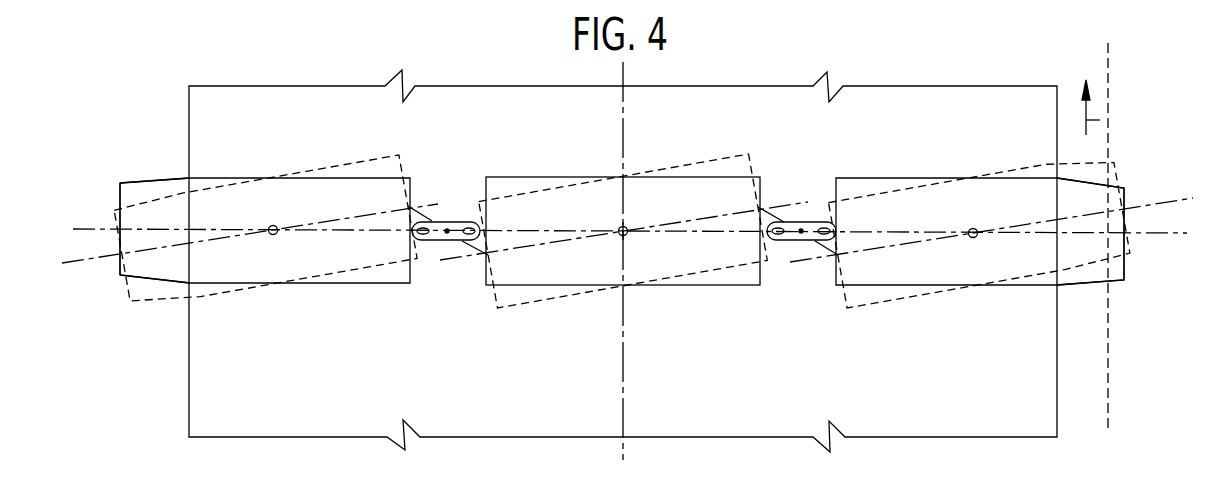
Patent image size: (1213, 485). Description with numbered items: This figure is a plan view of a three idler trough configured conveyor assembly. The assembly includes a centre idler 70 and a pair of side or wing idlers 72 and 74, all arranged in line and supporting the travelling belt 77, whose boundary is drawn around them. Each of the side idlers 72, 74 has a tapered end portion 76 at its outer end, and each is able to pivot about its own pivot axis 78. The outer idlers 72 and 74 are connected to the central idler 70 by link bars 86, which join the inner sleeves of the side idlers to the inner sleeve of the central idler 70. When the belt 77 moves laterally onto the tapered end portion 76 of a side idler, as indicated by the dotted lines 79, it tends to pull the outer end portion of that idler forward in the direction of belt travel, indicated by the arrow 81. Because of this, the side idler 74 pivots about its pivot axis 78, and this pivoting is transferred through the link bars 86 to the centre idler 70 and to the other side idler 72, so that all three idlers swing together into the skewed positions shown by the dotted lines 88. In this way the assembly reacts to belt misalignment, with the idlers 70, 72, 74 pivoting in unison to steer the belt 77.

The centre idler 70 is at (548, 177).
The side idler 72 is at (225, 178).
The side idler 74 is at (876, 178).
The tapered end portion 76 is at (147, 181).
The belt 77 is at (203, 380).
The pivot axis 78 is at (274, 235).
The dotted lines 79 is at (1108, 365).
The arrow 81 is at (1097, 121).
The link bar 86 is at (462, 221).
The dotted lines 88 is at (348, 164).